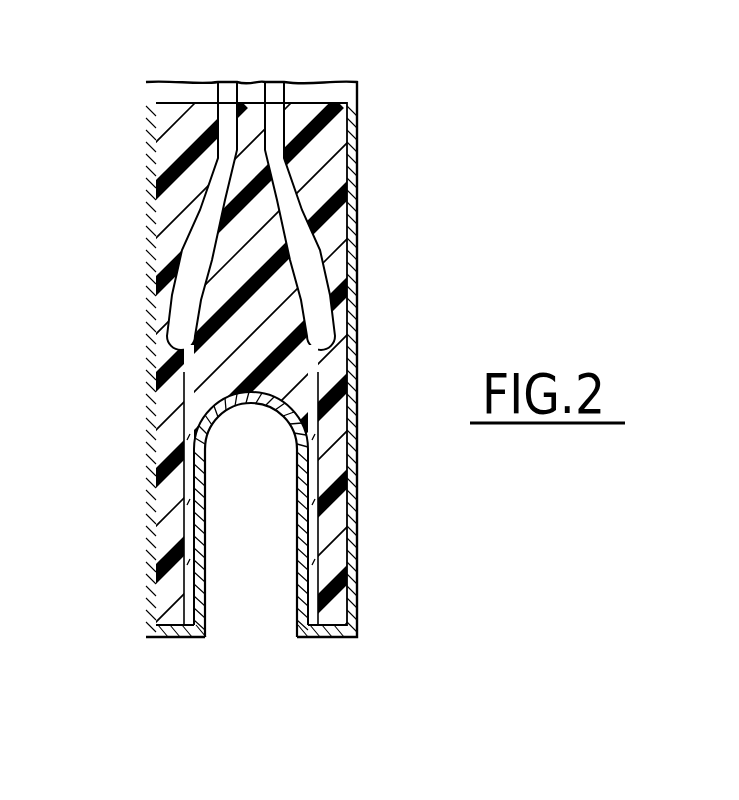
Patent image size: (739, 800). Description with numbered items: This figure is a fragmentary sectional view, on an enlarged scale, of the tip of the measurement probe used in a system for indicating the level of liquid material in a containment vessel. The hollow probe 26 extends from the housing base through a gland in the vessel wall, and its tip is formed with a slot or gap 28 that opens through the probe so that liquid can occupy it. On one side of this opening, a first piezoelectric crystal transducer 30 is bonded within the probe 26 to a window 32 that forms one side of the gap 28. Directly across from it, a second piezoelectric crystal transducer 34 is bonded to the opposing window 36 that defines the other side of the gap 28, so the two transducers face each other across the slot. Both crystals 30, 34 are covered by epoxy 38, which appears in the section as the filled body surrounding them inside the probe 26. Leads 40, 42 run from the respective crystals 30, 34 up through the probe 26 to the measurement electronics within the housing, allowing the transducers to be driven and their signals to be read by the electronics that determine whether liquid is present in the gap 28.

The hollow probe 26 is at (353, 250).
The slot or gap 28 is at (260, 610).
The first piezoelectric crystal transducer 30 is at (197, 436).
The window 32 is at (197, 524).
The second piezoelectric crystal transducer 34 is at (310, 465).
The opposing window 36 is at (315, 538).
The epoxy 38 is at (333, 160).
The lead 40 is at (225, 90).
The lead 42 is at (278, 92).